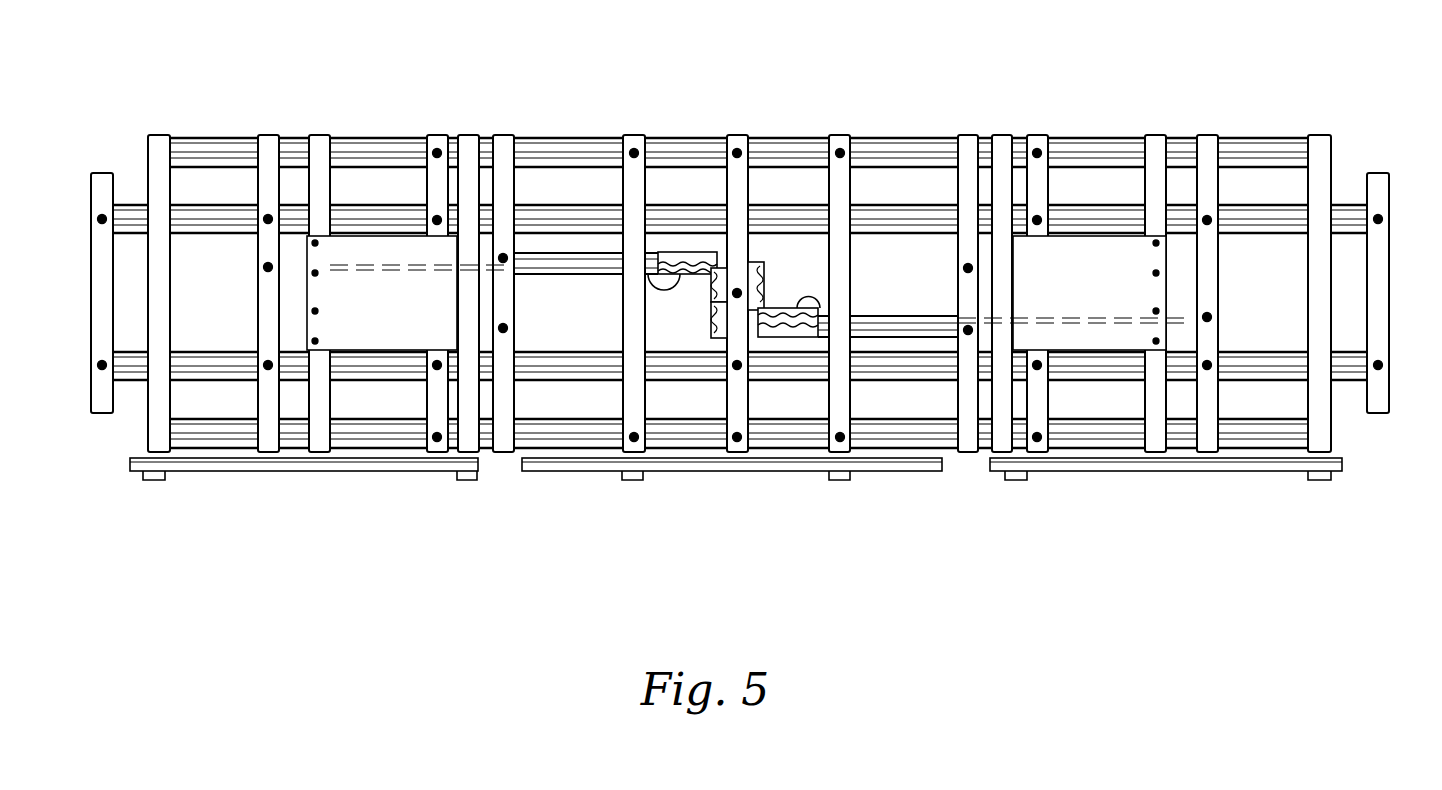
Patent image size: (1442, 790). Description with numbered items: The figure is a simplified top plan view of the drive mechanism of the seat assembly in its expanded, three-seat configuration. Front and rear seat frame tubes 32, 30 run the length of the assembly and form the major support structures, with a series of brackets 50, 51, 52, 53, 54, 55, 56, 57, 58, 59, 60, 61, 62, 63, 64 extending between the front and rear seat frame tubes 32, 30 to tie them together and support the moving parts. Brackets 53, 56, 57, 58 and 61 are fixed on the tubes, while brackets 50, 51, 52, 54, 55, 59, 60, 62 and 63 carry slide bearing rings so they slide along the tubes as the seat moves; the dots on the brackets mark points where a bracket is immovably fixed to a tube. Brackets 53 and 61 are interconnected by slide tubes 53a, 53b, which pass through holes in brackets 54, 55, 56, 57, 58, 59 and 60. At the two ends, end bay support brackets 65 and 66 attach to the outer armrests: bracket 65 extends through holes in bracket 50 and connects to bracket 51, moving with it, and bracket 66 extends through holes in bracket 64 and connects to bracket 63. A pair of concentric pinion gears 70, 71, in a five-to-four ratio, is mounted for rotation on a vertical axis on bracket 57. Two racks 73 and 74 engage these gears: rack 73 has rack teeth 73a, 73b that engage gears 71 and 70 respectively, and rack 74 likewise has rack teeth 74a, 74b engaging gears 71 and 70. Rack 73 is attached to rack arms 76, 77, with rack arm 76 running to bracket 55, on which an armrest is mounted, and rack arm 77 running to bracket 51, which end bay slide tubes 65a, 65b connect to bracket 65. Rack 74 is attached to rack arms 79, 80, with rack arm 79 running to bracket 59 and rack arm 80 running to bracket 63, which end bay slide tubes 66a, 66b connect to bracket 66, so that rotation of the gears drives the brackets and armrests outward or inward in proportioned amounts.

The rear seat frame tube 30 is at (1090, 148).
The front seat frame tube 32 is at (1090, 432).
The bracket 50 is at (158, 142).
The bracket 51 is at (268, 142).
The bracket 52 is at (320, 142).
The bracket 53 is at (437, 142).
The slide tube 53a is at (790, 215).
The slide tube 53b is at (560, 360).
The bracket 54 is at (468, 142).
The bracket 55 is at (503, 142).
The bracket 56 is at (633, 142).
The bracket 57 is at (738, 142).
The bracket 58 is at (840, 142).
The bracket 59 is at (968, 142).
The bracket 60 is at (1003, 142).
The bracket 61 is at (1037, 142).
The bracket 62 is at (1155, 142).
The bracket 63 is at (1207, 142).
The bracket 64 is at (1320, 142).
The end bay support bracket 65 is at (103, 178).
The end bay slide tube 65a is at (205, 215).
The end bay slide tube 65b is at (210, 360).
The end bay support bracket 66 is at (1378, 178).
The end bay slide tube 66a is at (1270, 150).
The end bay slide tube 66b is at (1270, 365).
The pinion gear 70 is at (705, 298).
The pinion gear 71 is at (718, 312).
The rack 73 is at (682, 153).
The rack teeth 73a is at (664, 252).
The rack teeth 73b is at (680, 252).
The rack 74 is at (785, 312).
The rack teeth 74a is at (820, 300).
The rack teeth 74b is at (757, 300).
The rack arm 76 is at (548, 262).
The rack arm 77 is at (600, 275).
The rack arm 79 is at (877, 325).
The rack arm 80 is at (947, 318).